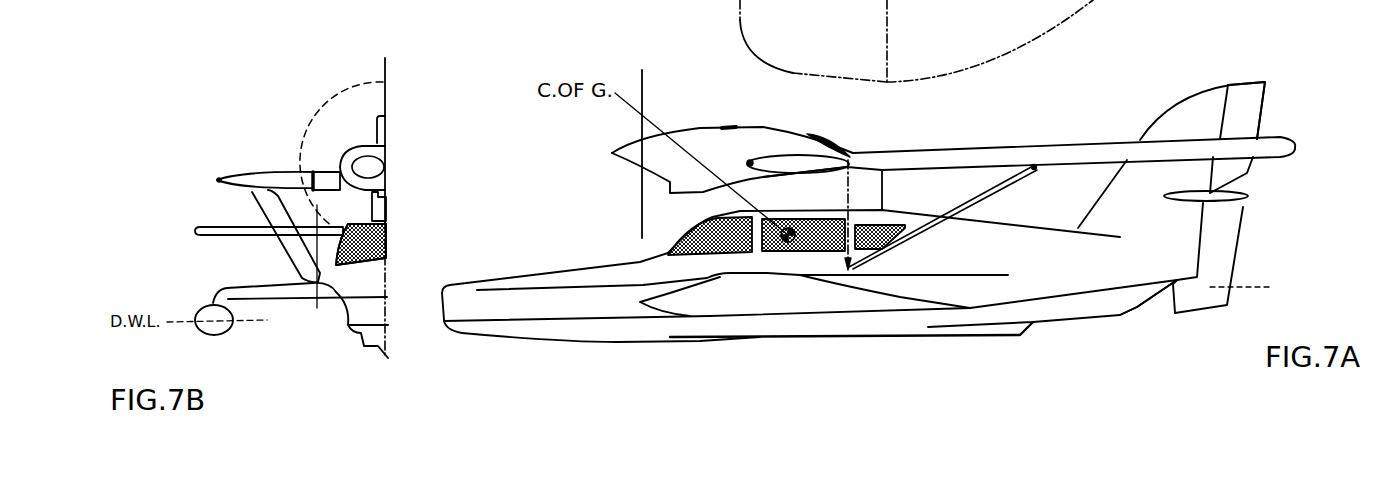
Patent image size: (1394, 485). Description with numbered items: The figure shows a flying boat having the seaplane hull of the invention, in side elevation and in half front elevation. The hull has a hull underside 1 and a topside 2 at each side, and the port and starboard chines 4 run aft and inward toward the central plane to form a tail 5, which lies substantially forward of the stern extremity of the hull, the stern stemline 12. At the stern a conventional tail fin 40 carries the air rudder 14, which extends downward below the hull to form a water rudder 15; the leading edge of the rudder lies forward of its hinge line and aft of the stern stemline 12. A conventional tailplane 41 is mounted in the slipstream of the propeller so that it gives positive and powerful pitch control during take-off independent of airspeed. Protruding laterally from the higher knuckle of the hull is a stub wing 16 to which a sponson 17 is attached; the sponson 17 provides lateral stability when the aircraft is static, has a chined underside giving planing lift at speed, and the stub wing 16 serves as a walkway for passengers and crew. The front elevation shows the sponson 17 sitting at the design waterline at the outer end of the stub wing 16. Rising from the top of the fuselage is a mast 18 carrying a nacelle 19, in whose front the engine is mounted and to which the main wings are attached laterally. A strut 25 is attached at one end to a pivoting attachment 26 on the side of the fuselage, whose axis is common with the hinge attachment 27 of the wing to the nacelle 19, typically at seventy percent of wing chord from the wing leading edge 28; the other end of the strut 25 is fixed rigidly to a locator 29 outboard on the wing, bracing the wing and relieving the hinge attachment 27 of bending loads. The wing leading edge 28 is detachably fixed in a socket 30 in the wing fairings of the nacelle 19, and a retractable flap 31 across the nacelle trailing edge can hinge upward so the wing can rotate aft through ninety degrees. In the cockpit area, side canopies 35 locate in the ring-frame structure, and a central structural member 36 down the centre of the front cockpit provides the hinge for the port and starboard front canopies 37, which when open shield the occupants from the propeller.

In FIG. 7A, the hull underside 1 is at (732, 340).
In FIG. 7A, the topside 2 is at (897, 287).
In FIG. 7A, the chine 4 is at (790, 341).
In FIG. 7A, the tail 5 is at (1023, 327).
In FIG. 7A, the stern stemline 12 is at (1143, 302).
In FIG. 7A, the air rudder 14 is at (1247, 92).
In FIG. 7A, the water rudder 15 is at (1210, 300).
In FIG. 7B, the stub wing 16 is at (280, 298).
In FIG. 7B, the sponson 17 is at (220, 335).
In FIG. 7A, the sponson 17 is at (683, 302).
In FIG. 7B, the mast 18 is at (386, 210).
In FIG. 7A, the mast 18 is at (793, 193).
In FIG. 7B, the nacelle 19 is at (350, 152).
In FIG. 7A, the nacelle 19 is at (677, 132).
In FIG. 7B, the strut 25 is at (300, 258).
In FIG. 7A, the strut 25 is at (990, 178).
In FIG. 7B, the pivoting attachment 26 is at (318, 284).
In FIG. 7B, the hinge attachment 27 is at (310, 177).
In FIG. 7A, the hinge attachment 27 is at (850, 158).
In FIG. 7B, the wing leading edge 28 is at (215, 180).
In FIG. 7B, the locator 29 is at (253, 190).
In FIG. 7A, the locator 29 is at (1035, 166).
In FIG. 7A, the socket 30 is at (750, 160).
In FIG. 7A, the retractable flap 31 is at (833, 147).
In FIG. 7A, the side canopy 35 is at (847, 272).
In FIG. 7B, the central structural member 36 is at (387, 235).
In FIG. 7B, the front canopy 37 is at (372, 258).
In FIG. 7A, the front canopy 37 is at (693, 232).
In FIG. 7A, the tail fin 40 is at (1177, 118).
In FIG. 7A, the tailplane 41 is at (1187, 207).